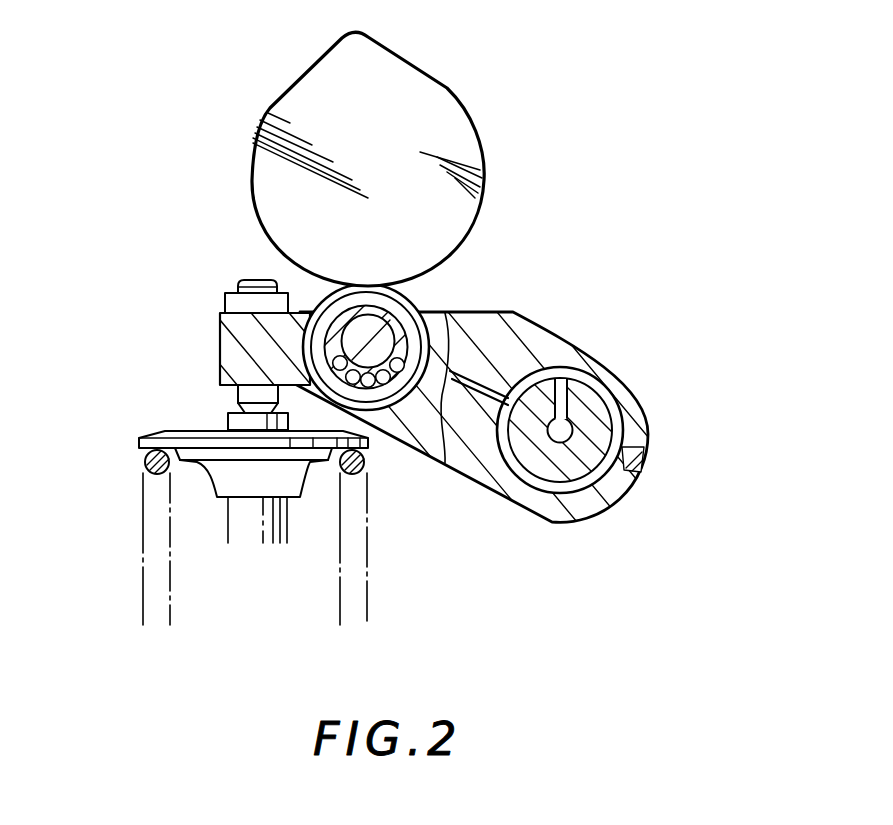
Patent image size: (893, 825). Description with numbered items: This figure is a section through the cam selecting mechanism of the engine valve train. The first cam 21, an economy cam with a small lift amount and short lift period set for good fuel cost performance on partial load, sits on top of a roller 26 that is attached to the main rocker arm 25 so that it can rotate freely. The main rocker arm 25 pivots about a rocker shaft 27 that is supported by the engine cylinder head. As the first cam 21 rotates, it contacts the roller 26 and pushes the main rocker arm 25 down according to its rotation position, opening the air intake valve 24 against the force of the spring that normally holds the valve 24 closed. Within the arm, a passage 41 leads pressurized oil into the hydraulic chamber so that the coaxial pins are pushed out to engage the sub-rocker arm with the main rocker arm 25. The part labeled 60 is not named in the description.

The first cam 21 is at (428, 78).
The air intake valve 24 is at (262, 523).
The main rocker arm 25 is at (213, 350).
The roller 26 is at (405, 301).
The rocker shaft 27 is at (577, 480).
The passage 41 is at (487, 402).
The fastening bolt 60 is at (145, 461).